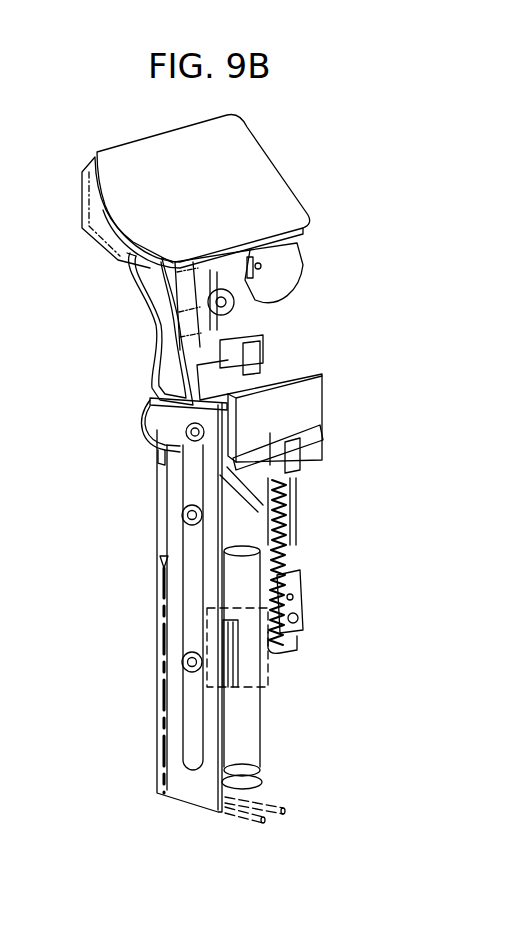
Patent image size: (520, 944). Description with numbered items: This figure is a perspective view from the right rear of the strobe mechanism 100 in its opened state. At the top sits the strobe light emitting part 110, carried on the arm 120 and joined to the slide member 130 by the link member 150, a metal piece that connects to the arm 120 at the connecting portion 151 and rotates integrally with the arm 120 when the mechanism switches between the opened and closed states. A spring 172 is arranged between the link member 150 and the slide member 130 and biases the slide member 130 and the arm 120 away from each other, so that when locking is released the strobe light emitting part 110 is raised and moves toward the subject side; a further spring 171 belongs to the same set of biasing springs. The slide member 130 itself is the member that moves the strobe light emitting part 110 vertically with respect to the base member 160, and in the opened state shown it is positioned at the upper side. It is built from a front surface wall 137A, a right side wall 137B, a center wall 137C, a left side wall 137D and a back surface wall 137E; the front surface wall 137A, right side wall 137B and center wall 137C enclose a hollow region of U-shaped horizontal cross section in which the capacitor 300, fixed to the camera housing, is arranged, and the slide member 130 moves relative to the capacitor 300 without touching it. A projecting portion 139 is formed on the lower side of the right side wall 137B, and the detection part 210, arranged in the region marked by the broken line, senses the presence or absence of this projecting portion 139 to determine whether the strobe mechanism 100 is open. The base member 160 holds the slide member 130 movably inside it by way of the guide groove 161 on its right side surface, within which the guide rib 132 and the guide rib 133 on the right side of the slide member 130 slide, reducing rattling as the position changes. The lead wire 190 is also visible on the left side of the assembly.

The strobe mechanism 100 is at (332, 197).
The strobe light emitting part 110 is at (240, 198).
The arm 120 is at (162, 290).
The slide member 130 is at (417, 385).
The guide rib 132 is at (182, 514).
The guide rib 133 is at (185, 663).
The front surface wall 137A is at (233, 458).
The right side wall 137B is at (223, 500).
The center wall 137C is at (290, 460).
The left side wall 137D is at (287, 507).
The back surface wall 137E is at (300, 410).
The projecting portion 139 is at (300, 560).
The link member 150 is at (255, 290).
The connecting portion 151 is at (232, 310).
The base member 160 is at (177, 612).
The guide groove 161 is at (188, 573).
The spring 171 is at (300, 635).
The spring 172 is at (238, 357).
The lead wire 190 is at (152, 422).
The detection part 210 is at (270, 675).
The capacitor 300 is at (245, 728).